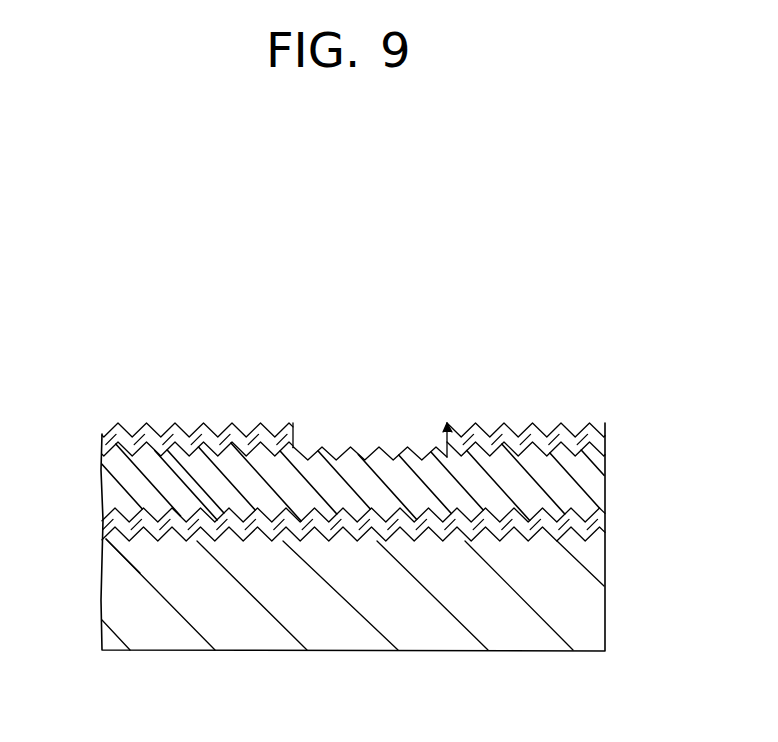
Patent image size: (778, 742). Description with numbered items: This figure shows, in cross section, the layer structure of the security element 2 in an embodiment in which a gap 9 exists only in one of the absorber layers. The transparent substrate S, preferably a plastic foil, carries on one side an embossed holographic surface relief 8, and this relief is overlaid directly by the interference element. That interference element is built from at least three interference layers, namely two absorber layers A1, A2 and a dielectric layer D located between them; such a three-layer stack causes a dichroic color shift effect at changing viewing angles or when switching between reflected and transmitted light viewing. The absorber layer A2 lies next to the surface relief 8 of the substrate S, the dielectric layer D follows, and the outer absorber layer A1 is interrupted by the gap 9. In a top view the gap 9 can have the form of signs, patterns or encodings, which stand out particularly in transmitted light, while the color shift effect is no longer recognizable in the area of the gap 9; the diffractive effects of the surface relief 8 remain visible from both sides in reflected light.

The security element 2 is at (97, 432).
The gap 9 is at (367, 408).
The holographic surface relief 8 is at (126, 544).
The absorber layer A1 is at (610, 452).
The dielectric layer D is at (587, 488).
The absorber layer A2 is at (605, 530).
The transparent substrate S is at (585, 605).